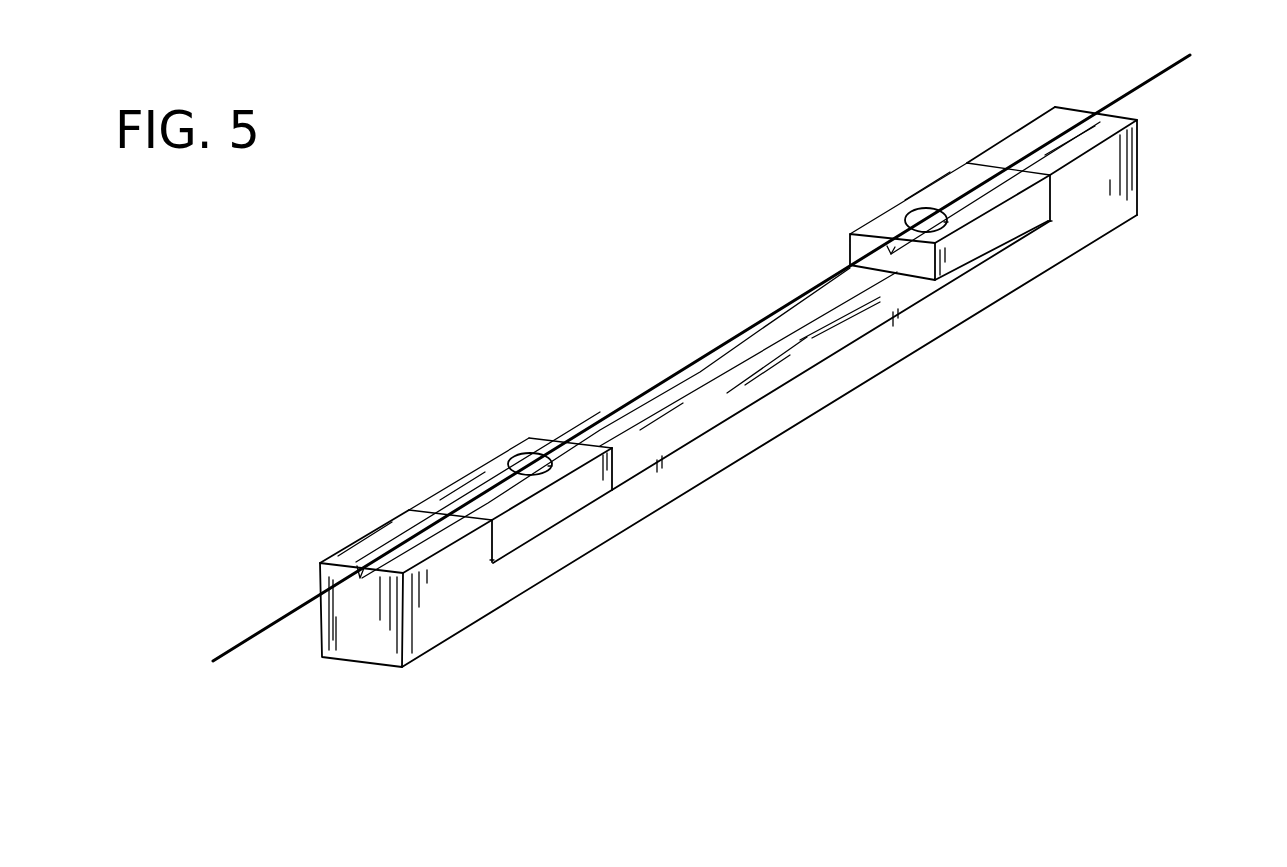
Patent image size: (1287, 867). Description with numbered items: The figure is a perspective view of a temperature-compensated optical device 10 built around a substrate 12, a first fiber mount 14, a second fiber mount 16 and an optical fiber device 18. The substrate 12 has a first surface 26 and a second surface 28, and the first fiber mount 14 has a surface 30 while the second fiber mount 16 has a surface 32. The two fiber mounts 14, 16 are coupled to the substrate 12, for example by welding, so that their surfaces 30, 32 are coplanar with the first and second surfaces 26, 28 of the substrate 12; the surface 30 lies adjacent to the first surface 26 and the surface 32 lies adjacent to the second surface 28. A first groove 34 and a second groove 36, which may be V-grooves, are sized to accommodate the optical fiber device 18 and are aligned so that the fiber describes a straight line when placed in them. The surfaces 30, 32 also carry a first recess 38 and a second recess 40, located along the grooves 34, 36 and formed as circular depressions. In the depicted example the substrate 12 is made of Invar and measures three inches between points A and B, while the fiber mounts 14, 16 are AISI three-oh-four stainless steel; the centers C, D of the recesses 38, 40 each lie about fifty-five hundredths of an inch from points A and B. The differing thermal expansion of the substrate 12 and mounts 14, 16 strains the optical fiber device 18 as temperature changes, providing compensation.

The temperature-compensated optical device 10 is at (925, 618).
The substrate 12 is at (840, 395).
The first fiber mount 14 is at (490, 457).
The second fiber mount 16 is at (958, 165).
The optical fiber device 18 is at (298, 613).
The first surface 26 is at (350, 543).
The second surface 28 is at (1110, 127).
The surface 30 is at (470, 480).
The surface 32 is at (870, 227).
The first groove 34 is at (402, 518).
The second groove 36 is at (957, 177).
The first recess 38 is at (532, 453).
The second recess 40 is at (912, 207).
The point A is at (491, 563).
The point B is at (1050, 218).
The center C is at (553, 466).
The center D is at (947, 225).